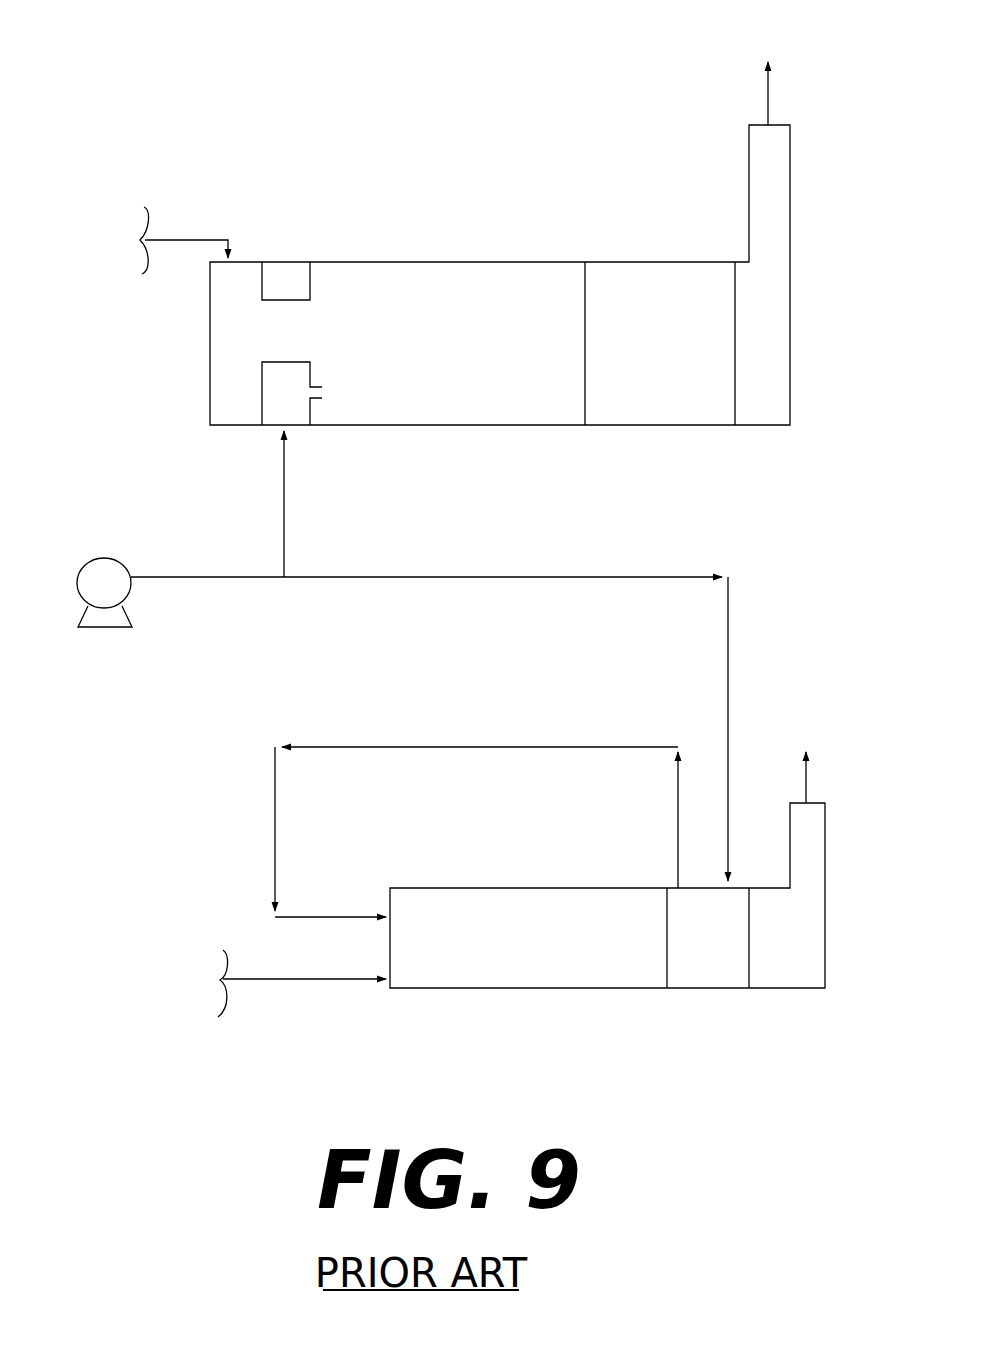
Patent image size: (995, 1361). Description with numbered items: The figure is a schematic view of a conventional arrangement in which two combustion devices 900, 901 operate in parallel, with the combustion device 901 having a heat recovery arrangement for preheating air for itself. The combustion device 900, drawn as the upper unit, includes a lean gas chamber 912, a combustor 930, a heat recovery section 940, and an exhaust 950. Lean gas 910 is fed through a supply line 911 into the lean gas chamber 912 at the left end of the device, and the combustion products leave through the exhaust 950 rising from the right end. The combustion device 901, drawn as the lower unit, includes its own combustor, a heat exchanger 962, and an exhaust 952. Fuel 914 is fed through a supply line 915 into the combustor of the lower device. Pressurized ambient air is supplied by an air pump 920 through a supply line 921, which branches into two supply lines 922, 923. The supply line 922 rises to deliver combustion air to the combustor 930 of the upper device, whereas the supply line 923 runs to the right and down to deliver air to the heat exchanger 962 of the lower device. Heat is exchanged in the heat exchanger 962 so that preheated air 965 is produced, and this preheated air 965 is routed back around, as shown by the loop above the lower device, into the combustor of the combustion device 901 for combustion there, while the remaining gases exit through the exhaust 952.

The combustion device 900 is at (367, 258).
The combustion device 901 is at (587, 884).
The lean gas 910 is at (103, 242).
The supply line 911 is at (165, 240).
The lean gas chamber 912 is at (222, 316).
The fuel 914 is at (182, 983).
The supply line 915 is at (233, 979).
The air pump 920 is at (78, 578).
The supply line 921 is at (145, 577).
The supply line 922 is at (284, 532).
The supply line 923 is at (537, 575).
The combustor 930 is at (477, 346).
The heat recovery section 940 is at (675, 339).
The exhaust 950 is at (762, 62).
The exhaust 952 is at (807, 741).
The heat exchanger 962 is at (734, 952).
The preheated air 965 is at (483, 747).